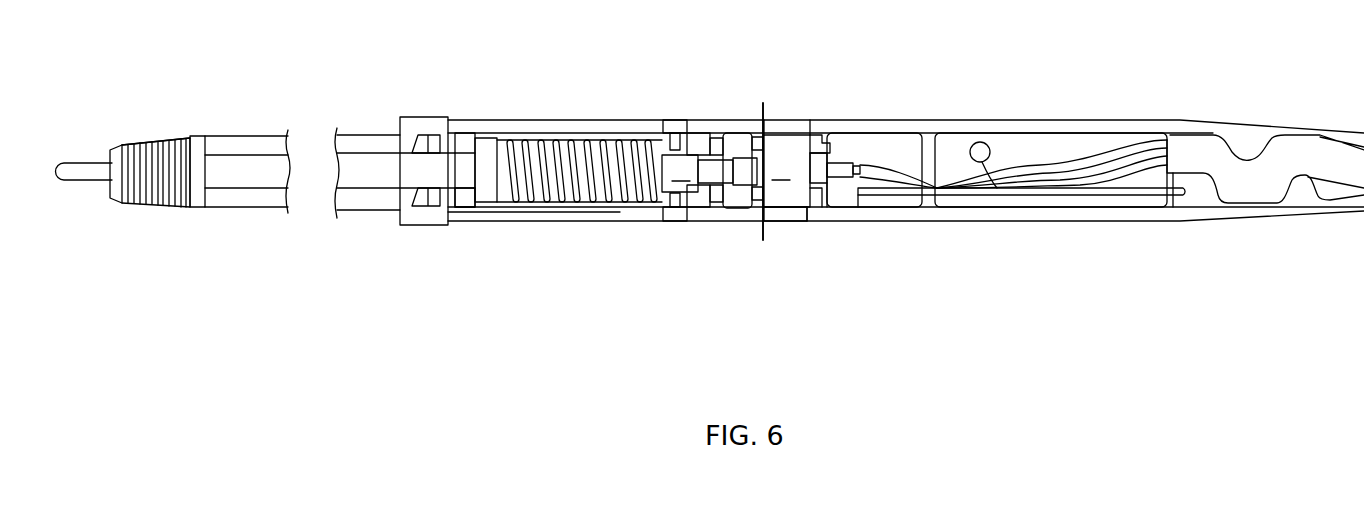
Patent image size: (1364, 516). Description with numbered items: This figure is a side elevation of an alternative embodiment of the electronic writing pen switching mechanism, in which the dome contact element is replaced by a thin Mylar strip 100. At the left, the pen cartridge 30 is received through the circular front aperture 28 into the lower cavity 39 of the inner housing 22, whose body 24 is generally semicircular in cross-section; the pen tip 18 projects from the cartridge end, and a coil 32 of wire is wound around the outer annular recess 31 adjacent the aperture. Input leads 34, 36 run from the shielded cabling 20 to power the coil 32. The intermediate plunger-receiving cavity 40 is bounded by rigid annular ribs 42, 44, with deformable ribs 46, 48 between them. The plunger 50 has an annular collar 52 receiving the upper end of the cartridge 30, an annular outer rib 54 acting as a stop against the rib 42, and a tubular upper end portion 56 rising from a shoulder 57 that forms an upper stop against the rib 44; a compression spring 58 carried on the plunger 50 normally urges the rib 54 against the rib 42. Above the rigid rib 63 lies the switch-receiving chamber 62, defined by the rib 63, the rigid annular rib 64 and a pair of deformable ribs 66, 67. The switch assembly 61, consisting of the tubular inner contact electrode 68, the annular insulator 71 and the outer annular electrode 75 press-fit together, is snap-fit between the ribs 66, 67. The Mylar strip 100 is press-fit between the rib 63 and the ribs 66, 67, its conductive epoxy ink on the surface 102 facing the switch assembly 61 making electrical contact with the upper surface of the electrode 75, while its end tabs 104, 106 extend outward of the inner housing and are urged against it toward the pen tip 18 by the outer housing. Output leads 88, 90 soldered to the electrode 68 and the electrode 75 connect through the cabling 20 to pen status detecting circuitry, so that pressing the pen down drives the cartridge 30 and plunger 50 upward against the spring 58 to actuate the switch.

The tip 18 is at (56, 182).
The shielded cabling 20 is at (1202, 150).
The inner housing 22 is at (412, 108).
The body 24 is at (975, 120).
The front aperture 28 is at (104, 141).
The pen cartridge 30 is at (240, 182).
The outer annular recess 31 is at (169, 132).
The coil 32 is at (188, 142).
The input lead 34 is at (1148, 138).
The input lead 36 is at (1117, 160).
The lower cavity 39 is at (353, 130).
The intermediate plunger-receiving cavity 40 is at (626, 212).
The rigid annular rib 42 is at (462, 132).
The rigid annular rib 44 is at (714, 210).
The deformable rib 46 is at (673, 140).
The deformable rib 48 is at (675, 208).
The plunger 50 is at (680, 173).
The annular collar 52 is at (468, 186).
The annular outer rib 54 is at (487, 137).
The tubular upper end portion 56 is at (746, 178).
The shoulder 57 is at (690, 140).
The compression spring 58 is at (567, 141).
The switch assembly 61 is at (803, 138).
The switch-receiving chamber 62 is at (814, 230).
The rigid rib 63 is at (757, 137).
The rigid annular rib 64 is at (831, 130).
The deformable rib 66 is at (784, 131).
The deformable rib 67 is at (788, 214).
The tubular inner contact electrode 68 is at (862, 150).
The annular insulator 71 is at (842, 212).
The outer annular electrode 75 is at (787, 171).
The output lead 88 is at (1110, 188).
The output lead 90 is at (1157, 184).
The Mylar strip 100 is at (758, 250).
The surface 102 is at (767, 101).
The end tab 104 is at (762, 229).
The end tab 106 is at (760, 101).